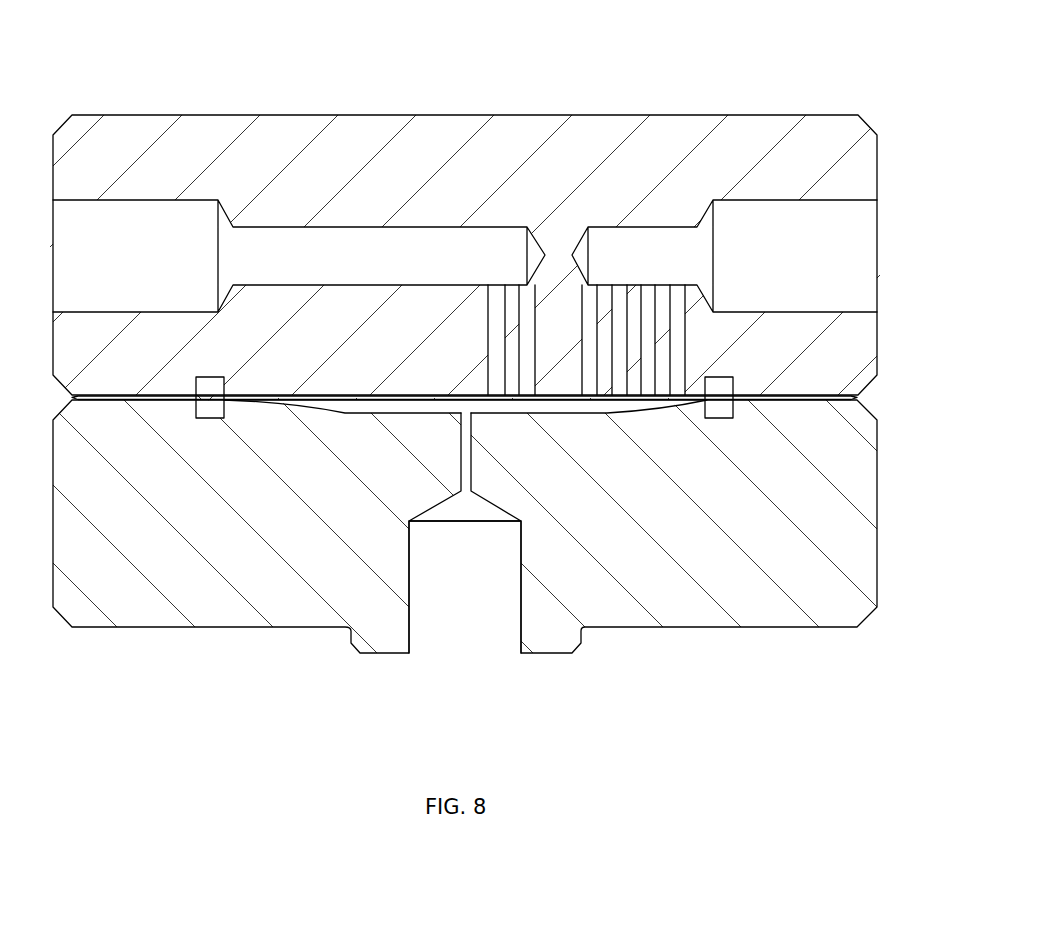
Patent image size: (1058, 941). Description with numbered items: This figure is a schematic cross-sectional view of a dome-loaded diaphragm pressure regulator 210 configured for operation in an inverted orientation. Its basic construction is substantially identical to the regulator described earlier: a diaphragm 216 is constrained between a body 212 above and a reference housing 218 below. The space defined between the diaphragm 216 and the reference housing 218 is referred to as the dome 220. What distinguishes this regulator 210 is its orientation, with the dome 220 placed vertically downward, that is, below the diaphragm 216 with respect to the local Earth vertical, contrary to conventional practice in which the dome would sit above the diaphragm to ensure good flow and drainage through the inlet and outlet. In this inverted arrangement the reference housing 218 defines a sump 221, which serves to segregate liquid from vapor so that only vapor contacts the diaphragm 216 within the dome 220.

The pressure regulator 210 is at (468, 48).
The body 212 is at (823, 127).
The diaphragm 216 is at (857, 398).
The reference housing 218 is at (805, 625).
The dome 220 is at (343, 420).
The sump 221 is at (465, 525).